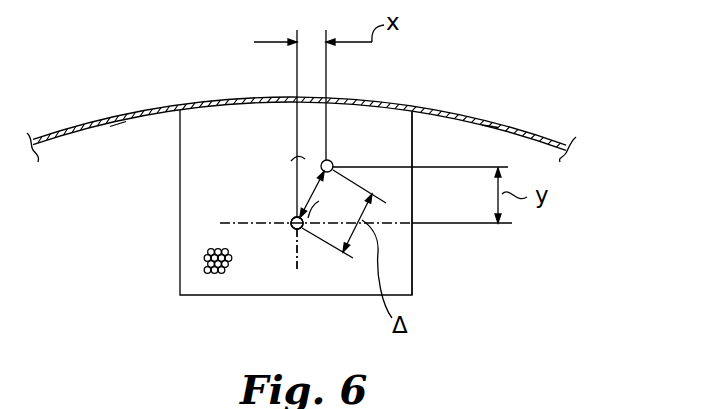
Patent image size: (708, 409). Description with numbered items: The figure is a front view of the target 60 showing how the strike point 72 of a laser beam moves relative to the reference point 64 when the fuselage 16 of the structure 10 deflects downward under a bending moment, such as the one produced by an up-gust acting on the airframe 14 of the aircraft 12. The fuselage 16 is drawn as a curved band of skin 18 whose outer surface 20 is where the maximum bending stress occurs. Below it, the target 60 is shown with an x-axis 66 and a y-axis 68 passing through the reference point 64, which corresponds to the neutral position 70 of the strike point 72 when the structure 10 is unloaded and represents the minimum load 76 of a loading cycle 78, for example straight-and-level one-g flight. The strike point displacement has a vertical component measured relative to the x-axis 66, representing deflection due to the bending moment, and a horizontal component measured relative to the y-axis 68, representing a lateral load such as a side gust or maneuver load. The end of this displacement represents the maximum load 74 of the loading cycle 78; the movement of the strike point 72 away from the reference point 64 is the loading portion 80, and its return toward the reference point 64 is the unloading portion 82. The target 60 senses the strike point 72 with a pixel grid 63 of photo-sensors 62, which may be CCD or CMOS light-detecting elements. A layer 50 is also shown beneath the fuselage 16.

The structure 10 is at (345, 75).
The aircraft 12 is at (556, 53).
The airframe 14 is at (552, 136).
The fuselage 16 is at (66, 134).
The skin 18 is at (119, 119).
The outer surface 20 is at (491, 113).
The substrate layer 50 is at (180, 152).
The target 60 is at (397, 137).
The photo-sensors 62 is at (177, 298).
The pixel grid 63 is at (205, 258).
The reference point 64 is at (271, 282).
The x-axis 66 is at (366, 212).
The y-axis 68 is at (298, 262).
The neutral position 70 is at (291, 229).
The strike point 72 is at (265, 141).
The maximum load 74 is at (332, 162).
The minimum load 76 is at (291, 226).
The loading cycle 78 is at (294, 219).
The loading portion 80 is at (327, 198).
The unloading portion 82 is at (305, 182).